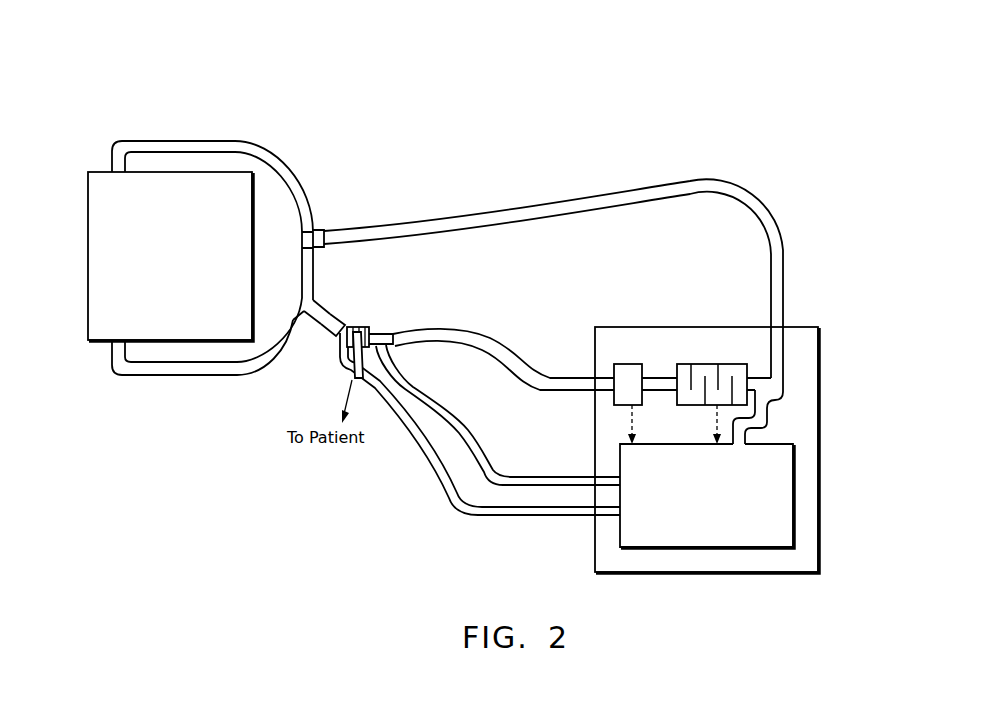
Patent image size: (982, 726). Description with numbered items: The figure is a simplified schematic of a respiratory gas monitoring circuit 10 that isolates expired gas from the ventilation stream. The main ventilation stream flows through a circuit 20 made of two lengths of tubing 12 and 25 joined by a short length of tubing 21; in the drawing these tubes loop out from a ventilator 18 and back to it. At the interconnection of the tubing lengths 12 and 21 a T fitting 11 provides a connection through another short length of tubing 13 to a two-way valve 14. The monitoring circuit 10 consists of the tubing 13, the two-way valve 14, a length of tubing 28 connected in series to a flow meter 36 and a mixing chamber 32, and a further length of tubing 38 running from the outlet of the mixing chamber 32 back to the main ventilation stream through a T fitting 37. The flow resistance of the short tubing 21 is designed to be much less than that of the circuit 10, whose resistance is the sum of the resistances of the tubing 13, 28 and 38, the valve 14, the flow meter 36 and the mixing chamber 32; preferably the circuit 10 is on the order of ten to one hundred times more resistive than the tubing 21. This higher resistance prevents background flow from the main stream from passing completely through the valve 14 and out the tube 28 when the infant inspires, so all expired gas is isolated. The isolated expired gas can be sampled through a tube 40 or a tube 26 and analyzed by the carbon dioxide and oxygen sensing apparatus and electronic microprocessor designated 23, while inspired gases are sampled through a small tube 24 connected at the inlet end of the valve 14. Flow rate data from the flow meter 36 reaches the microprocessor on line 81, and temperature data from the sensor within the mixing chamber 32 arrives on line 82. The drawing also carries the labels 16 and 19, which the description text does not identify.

The respiratory gas monitoring circuit 10 is at (799, 253).
The T fitting 11 is at (306, 305).
The length of tubing 12 is at (237, 378).
The short length of tubing 13 is at (333, 318).
The two-way valve 14 is at (365, 329).
The monitor housing 16 is at (820, 420).
The ventilator 18 is at (178, 293).
The endotracheal tube 19 is at (347, 368).
The main ventilation circuit 20 is at (272, 138).
The short length of tubing 21 is at (300, 272).
The CO2 and O2 sensing apparatus and electronic microprocessor 23 is at (798, 511).
The small tube 24 is at (430, 462).
The length of tubing 25 is at (284, 162).
The tube 26 is at (477, 437).
The length of tubing 28 is at (490, 336).
The mixing chamber 32 is at (706, 364).
The flow meter 36 is at (626, 364).
The T fitting 37 is at (312, 229).
The length of tubing 38 is at (654, 181).
The tube 40 is at (769, 414).
The line 81 is at (632, 420).
The line 82 is at (717, 420).